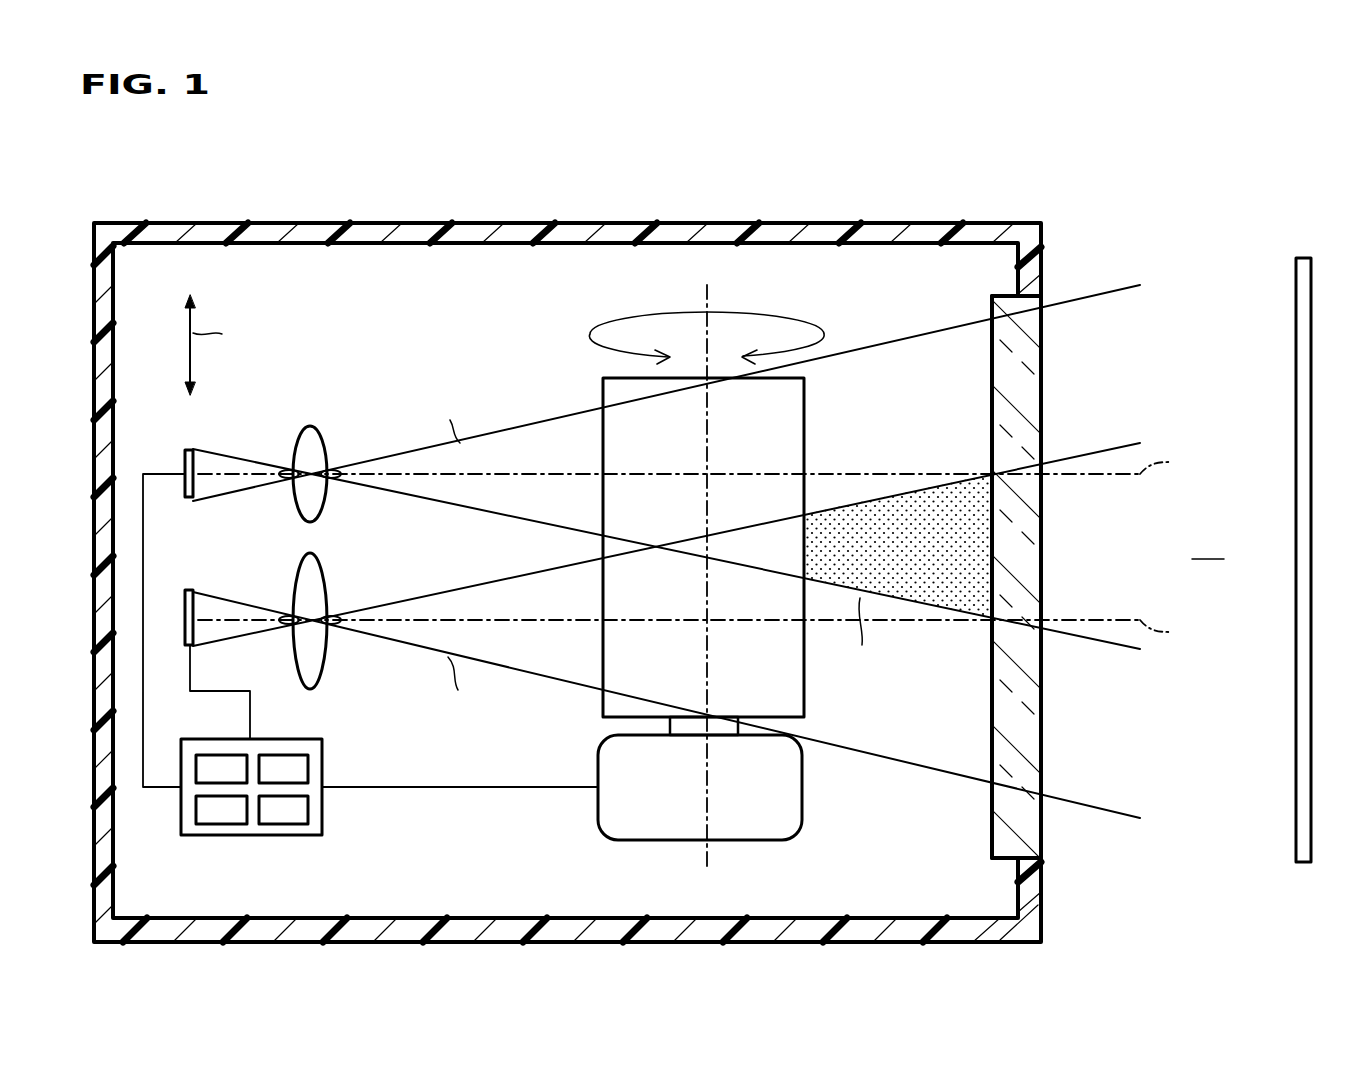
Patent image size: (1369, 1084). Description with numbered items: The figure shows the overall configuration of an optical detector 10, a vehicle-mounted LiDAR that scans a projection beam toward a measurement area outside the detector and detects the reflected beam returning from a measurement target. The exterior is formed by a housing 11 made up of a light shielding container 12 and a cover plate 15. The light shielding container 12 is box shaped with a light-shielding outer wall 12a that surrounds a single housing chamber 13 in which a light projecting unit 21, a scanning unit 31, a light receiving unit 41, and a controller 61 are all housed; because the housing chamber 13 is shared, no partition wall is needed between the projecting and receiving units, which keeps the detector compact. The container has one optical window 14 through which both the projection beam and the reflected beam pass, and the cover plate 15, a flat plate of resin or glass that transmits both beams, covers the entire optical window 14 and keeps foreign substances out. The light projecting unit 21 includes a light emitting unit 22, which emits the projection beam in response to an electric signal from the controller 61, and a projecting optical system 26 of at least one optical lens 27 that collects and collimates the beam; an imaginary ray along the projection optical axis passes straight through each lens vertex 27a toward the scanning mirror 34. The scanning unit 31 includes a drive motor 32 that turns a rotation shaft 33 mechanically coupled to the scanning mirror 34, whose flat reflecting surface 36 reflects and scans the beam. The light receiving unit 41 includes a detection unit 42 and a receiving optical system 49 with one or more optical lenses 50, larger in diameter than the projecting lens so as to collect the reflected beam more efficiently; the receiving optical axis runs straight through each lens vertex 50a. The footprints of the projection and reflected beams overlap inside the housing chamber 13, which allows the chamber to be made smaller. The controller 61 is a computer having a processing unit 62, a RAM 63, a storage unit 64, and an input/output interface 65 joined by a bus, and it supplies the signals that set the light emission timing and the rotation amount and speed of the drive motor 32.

The optical detector 10 is at (136, 182).
The housing 11 is at (1078, 175).
The light shielding container 12 is at (982, 222).
The outer wall 12a is at (538, 222).
The housing chamber 13 is at (446, 299).
The optical window 14 is at (1012, 858).
The cover plate 15 is at (1041, 311).
The light projecting unit 21 is at (370, 378).
The light emitting unit 22 is at (190, 450).
The projecting optical system 26 is at (298, 440).
The optical lens 27 is at (310, 474).
The lens vertex 27a is at (335, 481).
The scanning unit 31 is at (794, 300).
The drive motor 32 is at (598, 822).
The rotation shaft 33 is at (670, 726).
The scanning mirror 34 is at (604, 378).
The reflecting surface 36 is at (628, 425).
The light receiving unit 41 is at (385, 560).
The detection unit 42 is at (190, 590).
The receiving optical system 49 is at (328, 650).
The optical lens 50 is at (310, 621).
The lens vertex 50a is at (335, 614).
The controller 61 is at (181, 812).
The processing unit 62 is at (216, 755).
The RAM 63 is at (277, 755).
The storage unit 64 is at (221, 824).
The input/output interface 65 is at (282, 824).